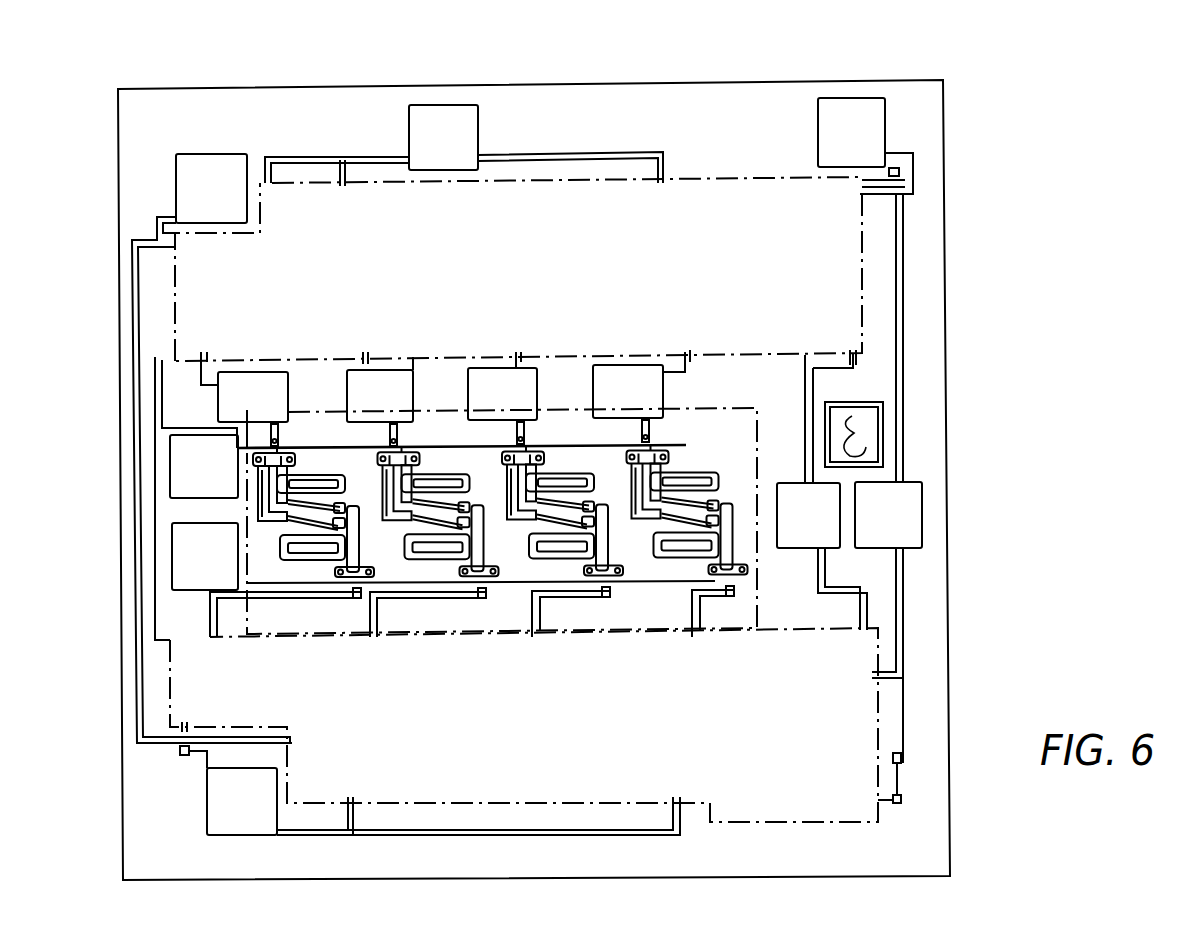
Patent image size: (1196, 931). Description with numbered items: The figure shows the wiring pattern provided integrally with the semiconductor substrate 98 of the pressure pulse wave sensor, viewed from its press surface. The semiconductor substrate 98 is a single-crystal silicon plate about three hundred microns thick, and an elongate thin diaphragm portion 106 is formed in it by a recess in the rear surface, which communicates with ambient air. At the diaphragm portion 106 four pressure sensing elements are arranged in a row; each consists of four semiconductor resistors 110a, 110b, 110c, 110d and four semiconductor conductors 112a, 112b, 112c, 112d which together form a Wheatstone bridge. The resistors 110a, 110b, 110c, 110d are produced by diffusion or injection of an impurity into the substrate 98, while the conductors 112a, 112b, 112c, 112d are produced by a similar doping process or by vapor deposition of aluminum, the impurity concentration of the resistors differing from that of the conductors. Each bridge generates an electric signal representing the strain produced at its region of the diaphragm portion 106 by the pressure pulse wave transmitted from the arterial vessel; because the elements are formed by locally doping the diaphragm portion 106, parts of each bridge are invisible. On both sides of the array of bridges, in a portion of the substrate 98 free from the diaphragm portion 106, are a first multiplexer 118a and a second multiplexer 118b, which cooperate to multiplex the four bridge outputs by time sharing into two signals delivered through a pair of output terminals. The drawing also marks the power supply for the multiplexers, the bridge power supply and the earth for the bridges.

The semiconductor substrate 98 is at (935, 122).
The diaphragm portion 106 is at (720, 412).
The semiconductor resistor 110a is at (306, 473).
The semiconductor resistor 110b is at (345, 505).
The semiconductor resistor 110c is at (295, 520).
The semiconductor resistor 110d is at (340, 577).
The semiconductor conductor 112a is at (503, 613).
The semiconductor conductor 112b is at (288, 422).
The semiconductor conductor 112c is at (437, 444).
The semiconductor conductor 112d is at (287, 602).
The first multiplexer 118a is at (541, 286).
The second multiplexer 118b is at (624, 727).